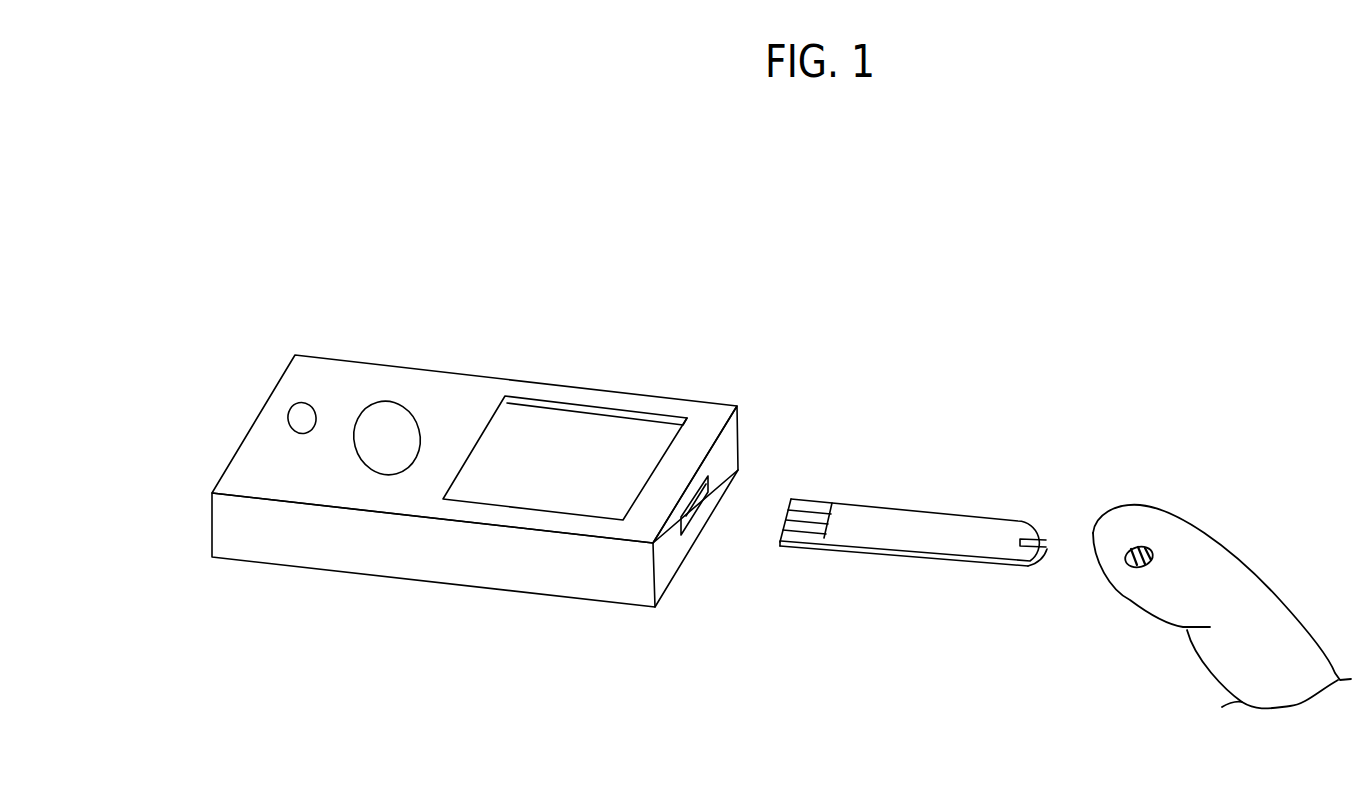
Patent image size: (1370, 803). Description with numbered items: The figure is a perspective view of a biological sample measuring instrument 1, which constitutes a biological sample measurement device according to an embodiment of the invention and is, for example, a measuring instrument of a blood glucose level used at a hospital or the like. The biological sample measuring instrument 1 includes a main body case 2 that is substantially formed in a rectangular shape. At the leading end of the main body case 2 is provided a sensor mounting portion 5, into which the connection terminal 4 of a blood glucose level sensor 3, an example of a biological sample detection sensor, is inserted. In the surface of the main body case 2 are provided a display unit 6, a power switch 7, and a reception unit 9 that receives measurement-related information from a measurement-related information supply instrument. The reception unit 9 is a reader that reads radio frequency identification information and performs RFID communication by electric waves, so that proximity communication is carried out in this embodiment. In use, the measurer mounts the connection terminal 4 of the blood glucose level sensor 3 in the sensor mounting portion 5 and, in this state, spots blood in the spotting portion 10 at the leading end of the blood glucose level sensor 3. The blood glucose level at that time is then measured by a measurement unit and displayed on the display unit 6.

The biological sample measuring instrument 1 is at (342, 337).
The main body case 2 is at (397, 380).
The blood glucose level sensor 3 is at (885, 522).
The connection terminal 4 is at (800, 532).
The sensor mounting portion 5 is at (690, 513).
The display unit 6 is at (584, 437).
The power switch 7 is at (298, 404).
The reception unit 9 is at (372, 453).
The spotting portion 10 is at (1034, 538).